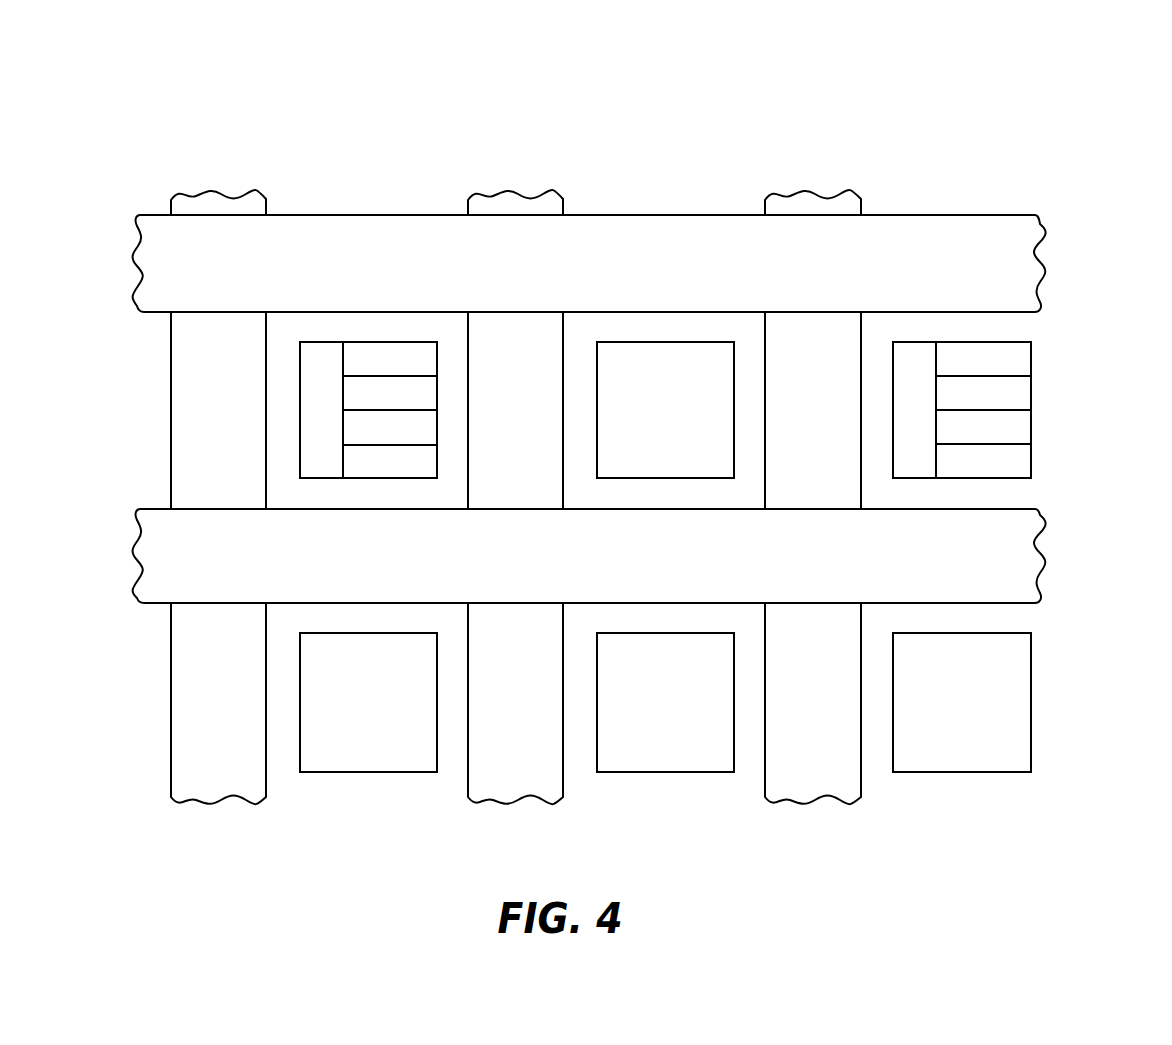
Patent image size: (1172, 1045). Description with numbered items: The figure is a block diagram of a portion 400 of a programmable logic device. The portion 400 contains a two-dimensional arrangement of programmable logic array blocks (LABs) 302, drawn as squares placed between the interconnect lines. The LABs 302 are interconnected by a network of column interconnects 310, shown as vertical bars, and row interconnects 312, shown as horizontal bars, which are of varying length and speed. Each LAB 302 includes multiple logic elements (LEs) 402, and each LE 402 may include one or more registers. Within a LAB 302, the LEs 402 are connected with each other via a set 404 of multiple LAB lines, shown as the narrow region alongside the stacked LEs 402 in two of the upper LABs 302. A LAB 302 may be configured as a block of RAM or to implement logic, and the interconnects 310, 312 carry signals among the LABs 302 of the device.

The portion of PLD 400 is at (645, 163).
The programmable logic array block 302 is at (652, 341).
The column interconnect 310 is at (180, 406).
The row interconnect 312 is at (1040, 256).
The logic element 402 is at (372, 370).
The set of LAB lines 404 is at (313, 470).